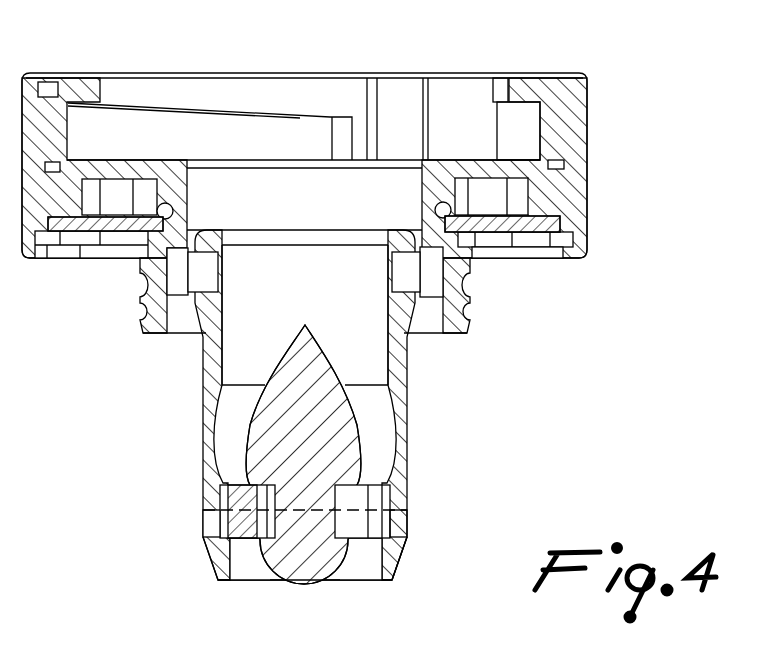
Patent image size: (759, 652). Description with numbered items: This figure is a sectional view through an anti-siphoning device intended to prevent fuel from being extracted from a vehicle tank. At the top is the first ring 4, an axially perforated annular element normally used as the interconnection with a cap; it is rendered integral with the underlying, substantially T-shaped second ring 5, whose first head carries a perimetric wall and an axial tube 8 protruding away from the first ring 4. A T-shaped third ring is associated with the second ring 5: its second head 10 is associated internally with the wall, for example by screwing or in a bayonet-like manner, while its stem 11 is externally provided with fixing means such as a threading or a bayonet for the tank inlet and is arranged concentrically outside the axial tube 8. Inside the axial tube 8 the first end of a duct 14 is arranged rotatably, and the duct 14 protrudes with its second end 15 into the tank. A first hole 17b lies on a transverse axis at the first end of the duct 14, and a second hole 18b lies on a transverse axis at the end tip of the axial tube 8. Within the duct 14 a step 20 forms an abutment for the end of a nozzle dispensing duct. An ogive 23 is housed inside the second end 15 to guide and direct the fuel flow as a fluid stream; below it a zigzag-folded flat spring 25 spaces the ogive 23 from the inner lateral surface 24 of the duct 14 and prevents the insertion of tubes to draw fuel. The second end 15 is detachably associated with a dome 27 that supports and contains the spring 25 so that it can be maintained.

The first ring 4 is at (603, 72).
The second ring 5 is at (607, 201).
The axial tube 8 is at (188, 213).
The second head 10 is at (527, 226).
The stem 11 is at (140, 308).
The duct 14 is at (185, 437).
The second end 15 is at (187, 571).
The first hole 17b is at (403, 278).
The second hole 18b is at (433, 280).
The step 20 is at (236, 372).
The ogive 23 is at (305, 308).
The inner lateral surface 24 is at (233, 558).
The flat spring 25 is at (355, 500).
The dome 27 is at (392, 560).